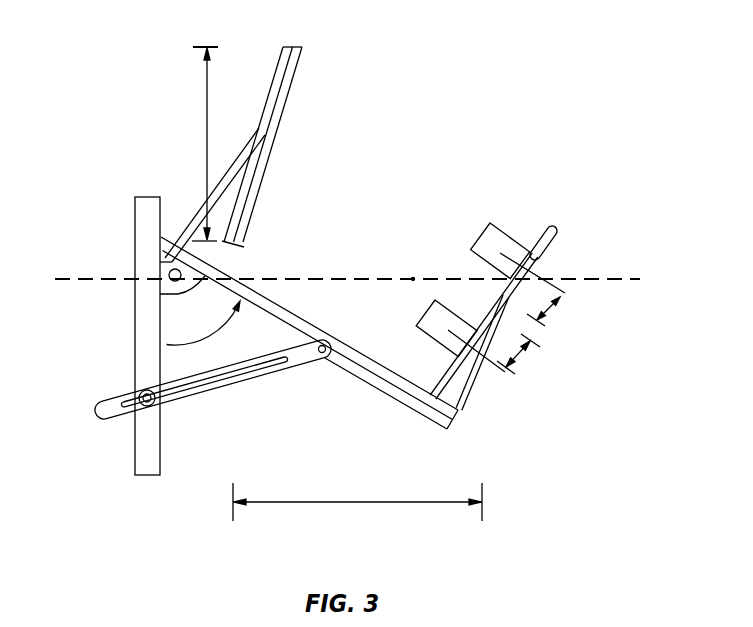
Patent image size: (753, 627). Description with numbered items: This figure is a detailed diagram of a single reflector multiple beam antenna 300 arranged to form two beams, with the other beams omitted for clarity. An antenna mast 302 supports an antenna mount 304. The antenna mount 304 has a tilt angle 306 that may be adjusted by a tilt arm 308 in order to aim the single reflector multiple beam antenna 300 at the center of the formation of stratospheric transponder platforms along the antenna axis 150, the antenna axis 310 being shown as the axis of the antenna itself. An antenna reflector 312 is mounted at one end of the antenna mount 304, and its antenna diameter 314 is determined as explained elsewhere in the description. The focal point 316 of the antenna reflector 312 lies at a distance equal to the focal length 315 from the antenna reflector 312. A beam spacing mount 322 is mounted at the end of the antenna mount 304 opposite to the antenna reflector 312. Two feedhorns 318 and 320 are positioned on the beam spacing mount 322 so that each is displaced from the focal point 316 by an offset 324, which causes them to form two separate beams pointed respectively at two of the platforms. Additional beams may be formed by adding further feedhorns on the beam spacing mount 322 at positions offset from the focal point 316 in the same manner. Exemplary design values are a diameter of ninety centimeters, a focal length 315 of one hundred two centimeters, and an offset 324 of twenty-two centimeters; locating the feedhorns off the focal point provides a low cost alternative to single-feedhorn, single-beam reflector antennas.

The single reflector multiple beam antenna 300 is at (546, 95).
The antenna mast 302 is at (100, 340).
The antenna mount 304 is at (384, 410).
The tilt angle 306 is at (223, 331).
The tilt arm 308 is at (213, 386).
The antenna axis 310 is at (309, 333).
The antenna reflector 312 is at (274, 154).
The antenna diameter 314 is at (171, 144).
The focal length 315 is at (357, 512).
The focal point 316 is at (379, 261).
The feedhorn 318 is at (426, 334).
The feedhorn 320 is at (486, 253).
The beam spacing mount 322 is at (535, 306).
The offset 324 is at (546, 311).
The antenna axis 150 is at (614, 279).